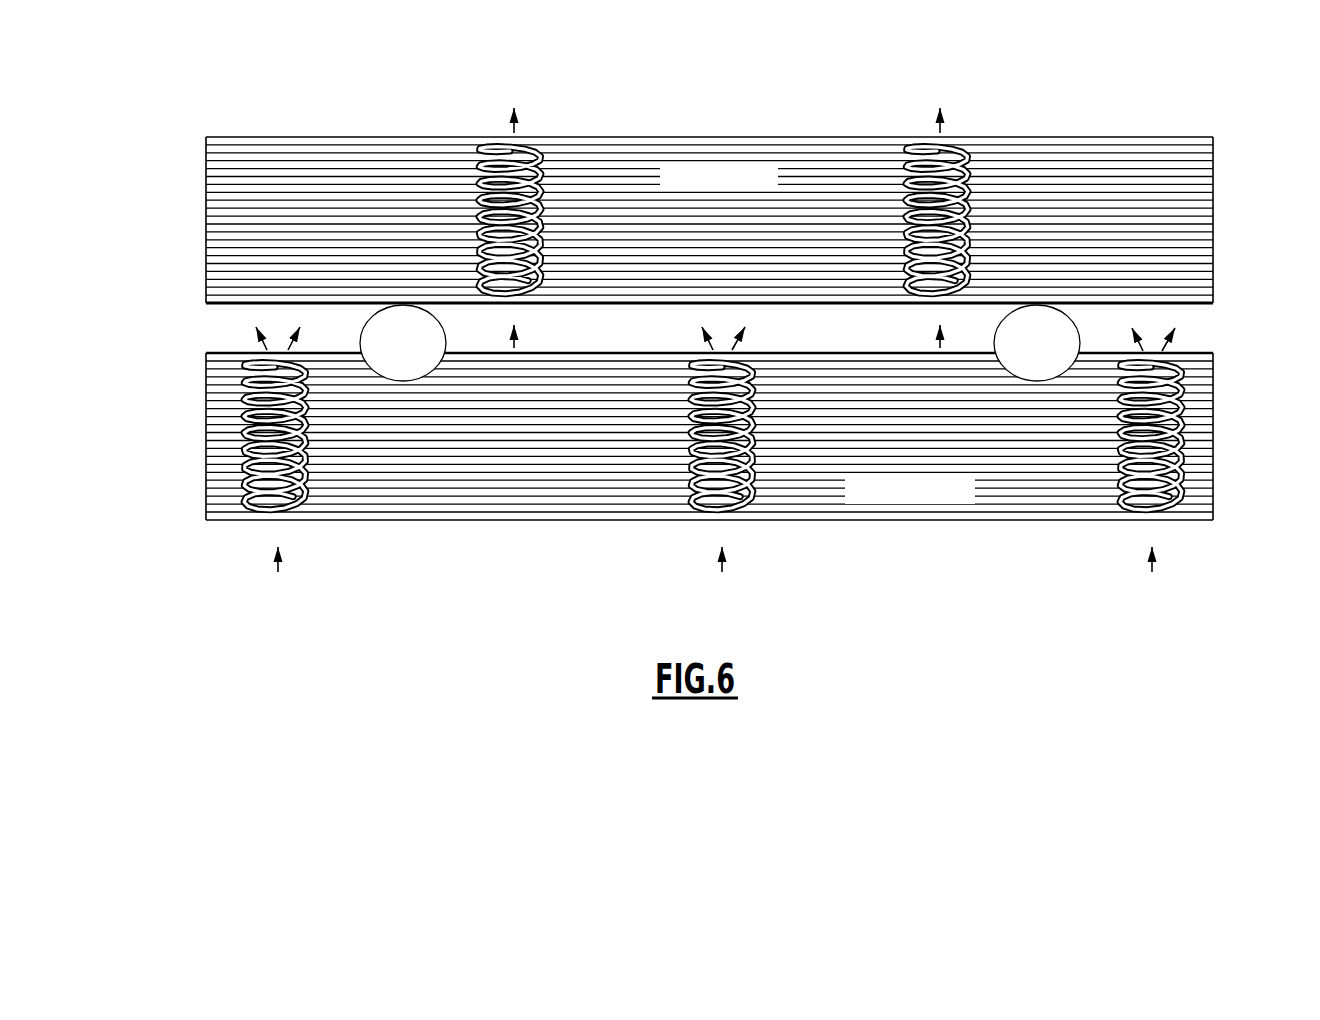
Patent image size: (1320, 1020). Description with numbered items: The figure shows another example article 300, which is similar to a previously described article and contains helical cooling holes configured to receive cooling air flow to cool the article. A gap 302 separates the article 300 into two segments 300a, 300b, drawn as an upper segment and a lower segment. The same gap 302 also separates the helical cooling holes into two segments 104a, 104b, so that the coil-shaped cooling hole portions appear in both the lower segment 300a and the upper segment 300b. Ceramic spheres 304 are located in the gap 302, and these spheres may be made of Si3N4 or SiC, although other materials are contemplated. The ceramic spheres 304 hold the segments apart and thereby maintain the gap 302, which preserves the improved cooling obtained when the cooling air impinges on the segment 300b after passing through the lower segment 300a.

The article 300 is at (184, 94).
The segment 300a is at (206, 425).
The segment 300b is at (206, 211).
The helical cooling hole segment 104a is at (222, 488).
The helical cooling hole segment 104b is at (478, 160).
The gap 302 is at (1233, 305).
The ceramic spheres 304 is at (410, 355).